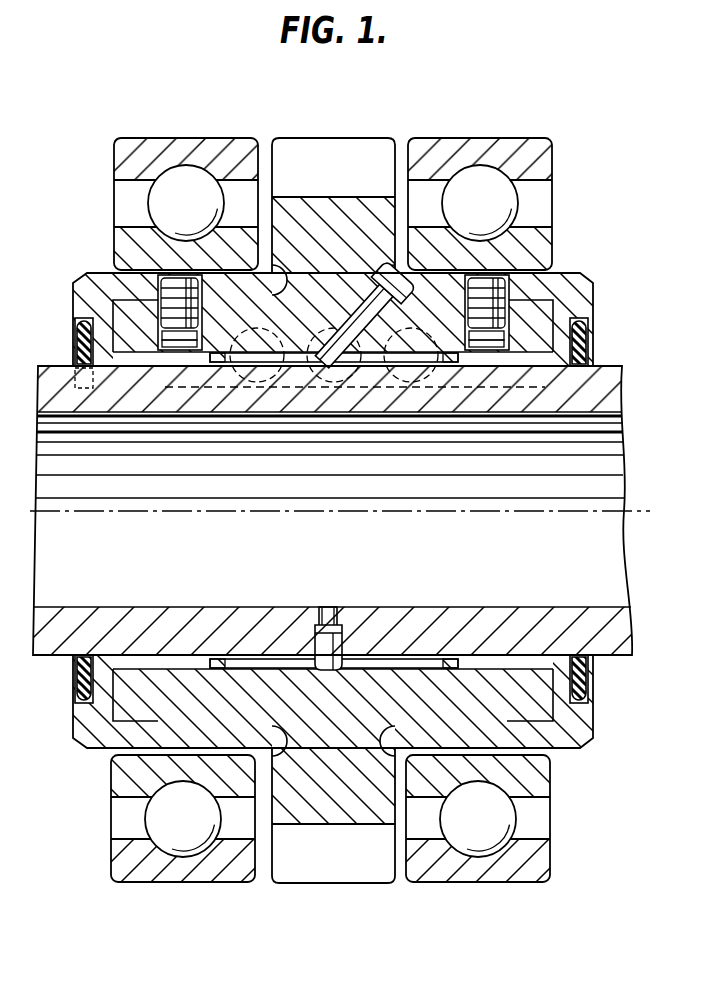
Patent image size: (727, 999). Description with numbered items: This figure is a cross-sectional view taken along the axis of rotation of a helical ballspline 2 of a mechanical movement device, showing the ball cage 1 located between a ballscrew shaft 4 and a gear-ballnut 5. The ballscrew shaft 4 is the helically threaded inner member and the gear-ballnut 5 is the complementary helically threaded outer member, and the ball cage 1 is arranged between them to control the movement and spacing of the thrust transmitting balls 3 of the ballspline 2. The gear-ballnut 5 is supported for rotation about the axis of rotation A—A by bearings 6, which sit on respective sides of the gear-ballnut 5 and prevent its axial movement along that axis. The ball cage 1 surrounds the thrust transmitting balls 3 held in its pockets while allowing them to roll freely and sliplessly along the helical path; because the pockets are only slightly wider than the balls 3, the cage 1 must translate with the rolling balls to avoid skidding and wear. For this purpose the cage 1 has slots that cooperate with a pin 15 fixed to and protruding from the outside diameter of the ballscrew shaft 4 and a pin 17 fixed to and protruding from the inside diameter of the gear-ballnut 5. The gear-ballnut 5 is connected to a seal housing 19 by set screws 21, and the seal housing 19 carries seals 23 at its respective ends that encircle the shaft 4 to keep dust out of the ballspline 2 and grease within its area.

The ball cage 1 is at (440, 655).
The helical ballspline 2 is at (29, 226).
The thrust transmitting balls 3 is at (350, 395).
The ballscrew shaft 4 is at (42, 361).
The gear-ballnut 5 is at (363, 139).
The bearings 6 is at (200, 148).
The pin 15 is at (340, 626).
The pin 17 is at (391, 280).
The seal housing 19 is at (585, 303).
The set screws 21 is at (170, 302).
The seals 23 is at (82, 342).